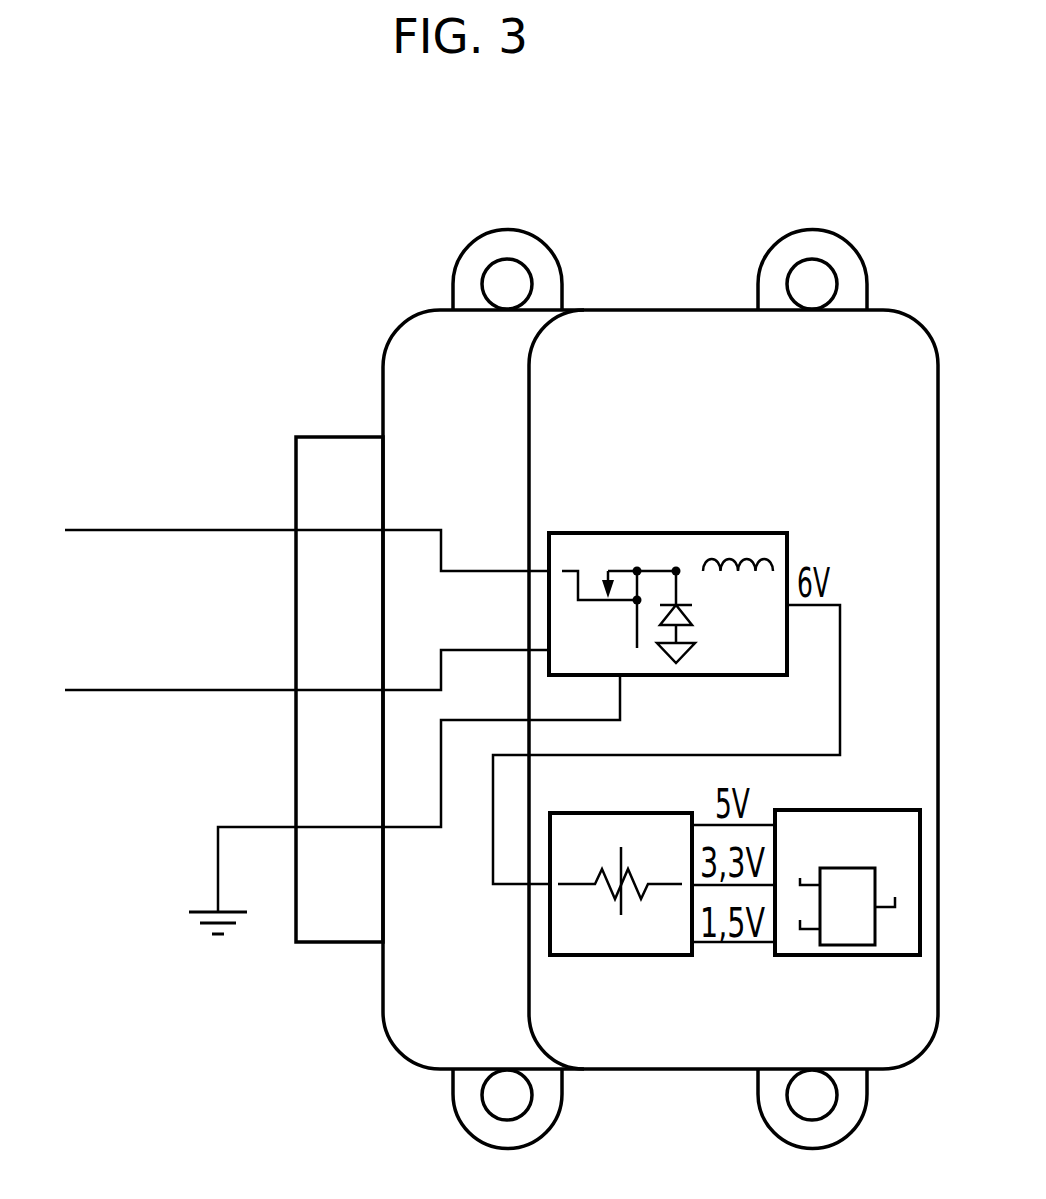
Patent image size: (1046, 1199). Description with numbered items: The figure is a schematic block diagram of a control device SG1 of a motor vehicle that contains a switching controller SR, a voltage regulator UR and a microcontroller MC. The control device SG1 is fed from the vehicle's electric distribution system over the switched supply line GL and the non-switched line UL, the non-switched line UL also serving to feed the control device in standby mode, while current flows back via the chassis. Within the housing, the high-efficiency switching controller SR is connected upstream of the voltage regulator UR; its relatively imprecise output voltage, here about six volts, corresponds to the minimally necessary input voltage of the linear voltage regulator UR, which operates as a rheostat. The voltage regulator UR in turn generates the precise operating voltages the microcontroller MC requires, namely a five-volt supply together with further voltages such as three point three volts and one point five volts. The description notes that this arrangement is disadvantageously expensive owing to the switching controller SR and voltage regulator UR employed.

The control device SG1 is at (667, 310).
The switching controller SR is at (619, 533).
The voltage regulator UR is at (620, 955).
The microcontroller MC is at (870, 810).
The switched supply line GL is at (150, 530).
The non-switched line UL is at (150, 690).